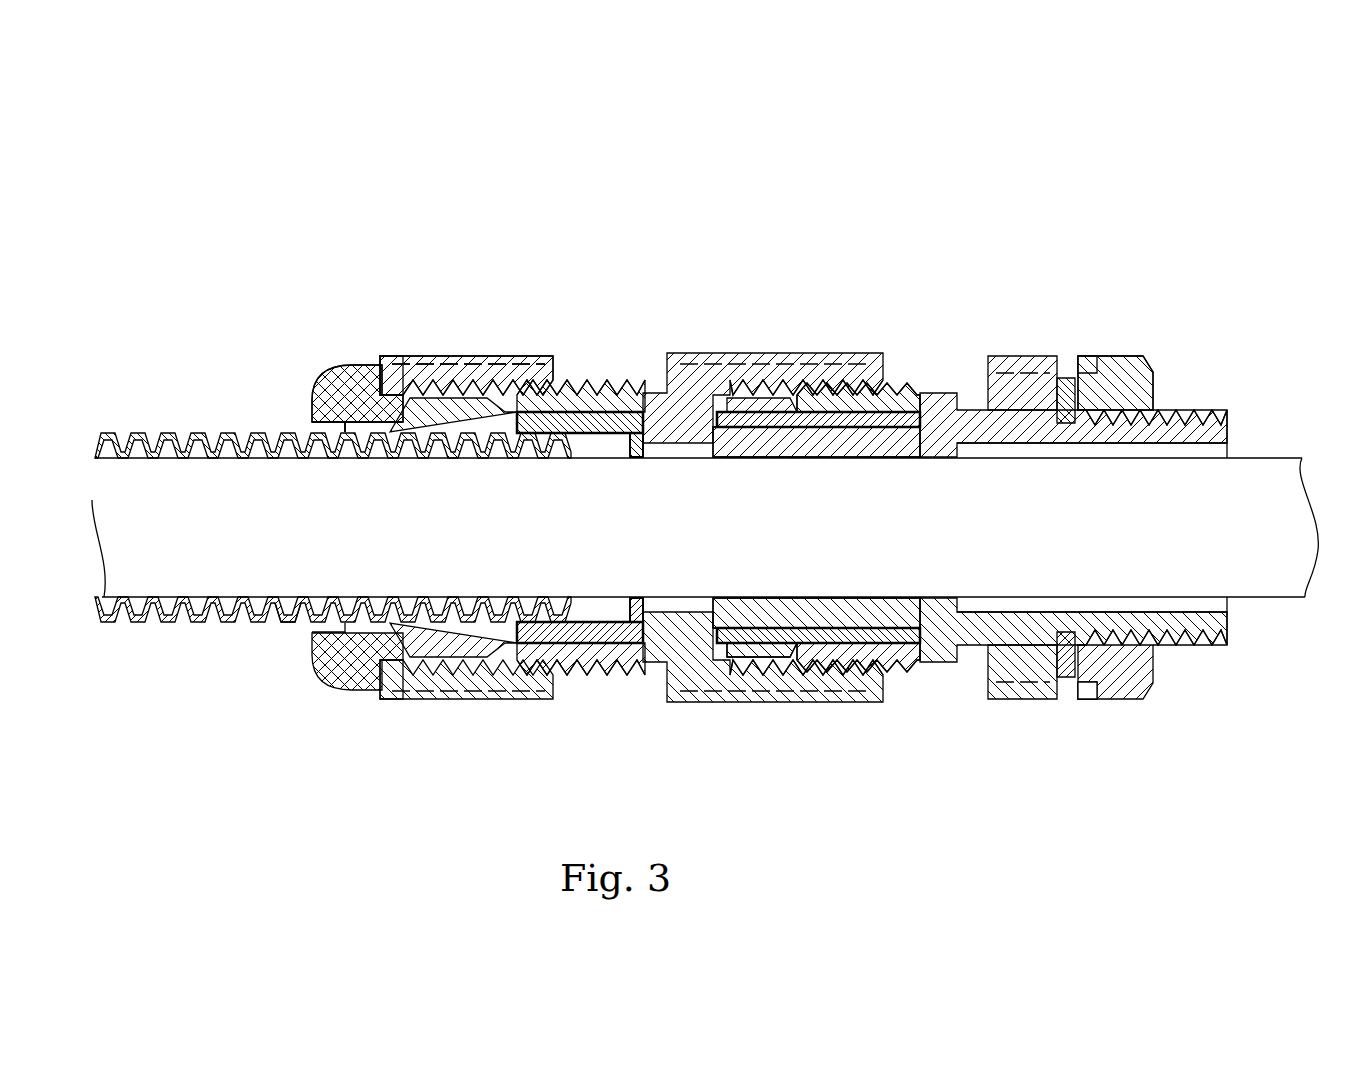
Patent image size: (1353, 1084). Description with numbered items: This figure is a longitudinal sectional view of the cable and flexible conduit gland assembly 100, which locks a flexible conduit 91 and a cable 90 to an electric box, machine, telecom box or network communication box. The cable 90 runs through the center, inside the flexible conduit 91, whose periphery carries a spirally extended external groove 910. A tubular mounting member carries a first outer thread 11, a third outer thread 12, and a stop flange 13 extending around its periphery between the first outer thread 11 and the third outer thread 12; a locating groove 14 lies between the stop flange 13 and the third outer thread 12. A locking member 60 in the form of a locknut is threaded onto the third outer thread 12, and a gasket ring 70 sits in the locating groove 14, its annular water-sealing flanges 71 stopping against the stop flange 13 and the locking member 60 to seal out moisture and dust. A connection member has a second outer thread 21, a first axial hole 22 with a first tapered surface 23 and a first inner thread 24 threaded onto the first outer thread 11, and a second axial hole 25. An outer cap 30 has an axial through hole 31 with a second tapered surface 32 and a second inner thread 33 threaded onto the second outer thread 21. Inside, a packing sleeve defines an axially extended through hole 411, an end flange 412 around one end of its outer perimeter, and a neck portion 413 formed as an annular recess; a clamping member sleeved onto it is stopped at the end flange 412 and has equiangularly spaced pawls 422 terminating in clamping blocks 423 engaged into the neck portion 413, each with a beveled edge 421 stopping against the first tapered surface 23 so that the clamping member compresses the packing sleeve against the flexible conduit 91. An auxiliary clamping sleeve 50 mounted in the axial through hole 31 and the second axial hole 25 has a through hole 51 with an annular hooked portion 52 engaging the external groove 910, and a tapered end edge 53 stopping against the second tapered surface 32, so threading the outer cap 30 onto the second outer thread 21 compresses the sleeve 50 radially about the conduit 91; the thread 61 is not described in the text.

The cable and flexible conduit gland assembly 100 is at (545, 238).
The first outer thread 11 is at (937, 425).
The third outer thread 12 is at (1190, 425).
The stop flange 13 is at (1025, 356).
The locating groove 14 is at (1092, 682).
The second outer thread 21 is at (620, 405).
The first axial hole 22 is at (832, 385).
The first tapered surface 23 is at (745, 440).
The first inner thread 24 is at (812, 398).
The second axial hole 25 is at (638, 402).
The outer cap 30 is at (483, 356).
The axial through hole 31 is at (320, 427).
The second tapered surface 32 is at (312, 392).
The second inner thread 33 is at (393, 375).
The auxiliary clamping sleeve 50 is at (509, 358).
The through hole 51 is at (592, 442).
The annular hooked portion 52 is at (345, 405).
The tapered end edge 53 is at (350, 421).
The locking member 60 is at (1130, 360).
The internal thread of lock nut 61 is at (1190, 410).
The gasket ring 70 is at (1065, 380).
The annular water-sealing flange 71 is at (1094, 362).
The cable 90 is at (1245, 568).
The flexible conduit 91 is at (212, 626).
The spirally extended external groove 910 is at (285, 628).
The axially extended through hole 411 is at (706, 453).
The end flange 412 is at (953, 422).
The neck portion 413 is at (753, 440).
The beveled edge 421 is at (708, 660).
The pawls 422 is at (772, 652).
The clamping block 423 is at (750, 620).